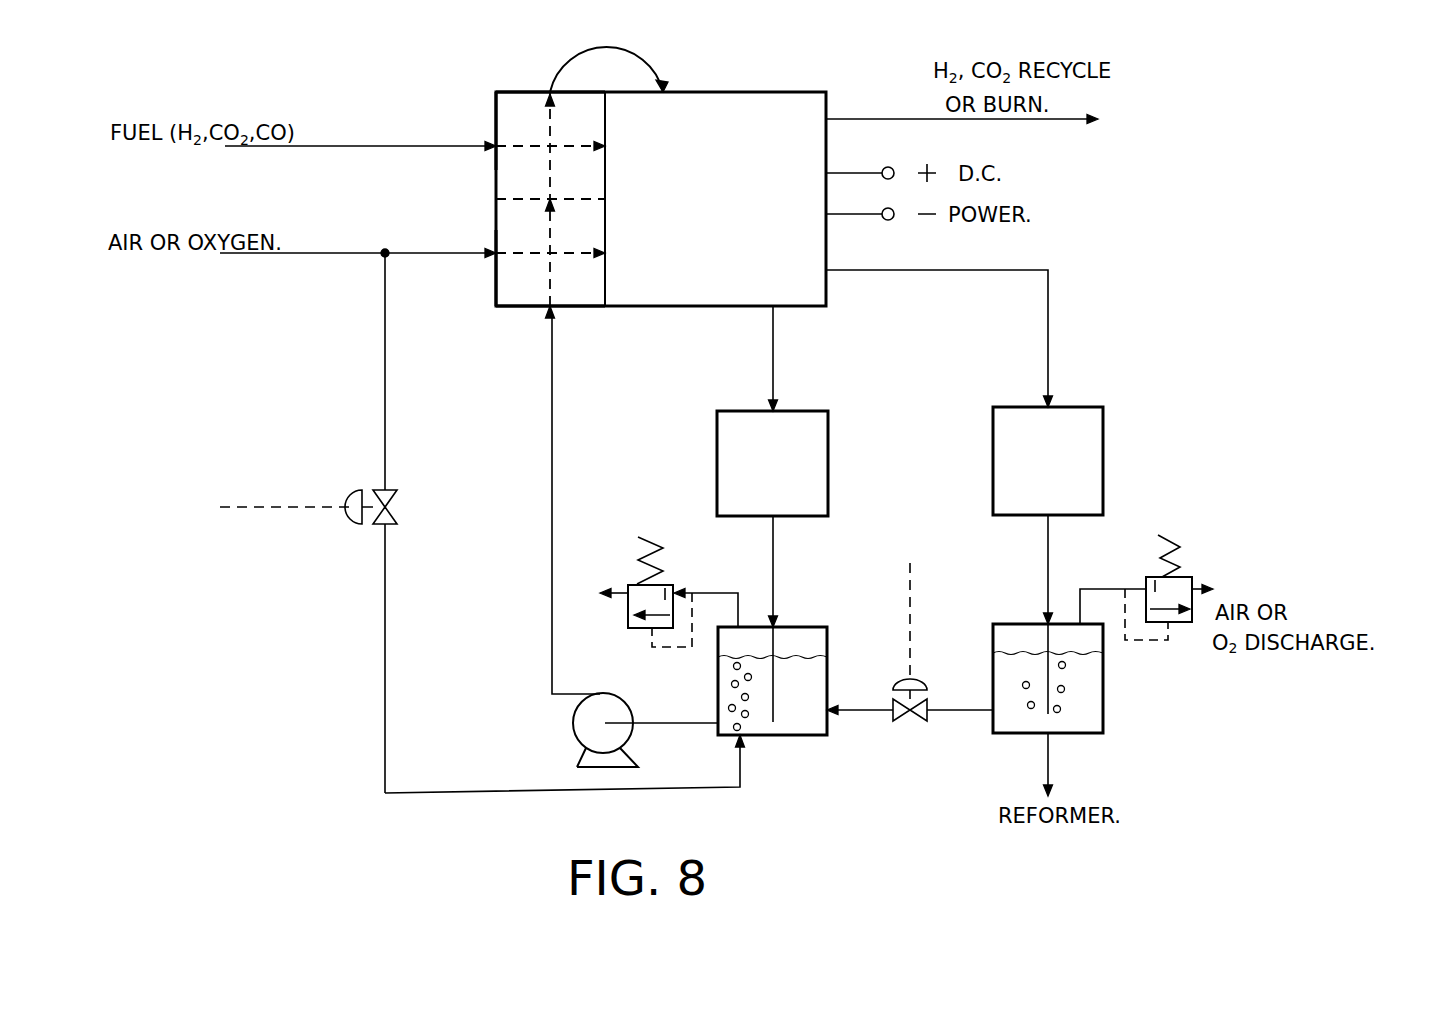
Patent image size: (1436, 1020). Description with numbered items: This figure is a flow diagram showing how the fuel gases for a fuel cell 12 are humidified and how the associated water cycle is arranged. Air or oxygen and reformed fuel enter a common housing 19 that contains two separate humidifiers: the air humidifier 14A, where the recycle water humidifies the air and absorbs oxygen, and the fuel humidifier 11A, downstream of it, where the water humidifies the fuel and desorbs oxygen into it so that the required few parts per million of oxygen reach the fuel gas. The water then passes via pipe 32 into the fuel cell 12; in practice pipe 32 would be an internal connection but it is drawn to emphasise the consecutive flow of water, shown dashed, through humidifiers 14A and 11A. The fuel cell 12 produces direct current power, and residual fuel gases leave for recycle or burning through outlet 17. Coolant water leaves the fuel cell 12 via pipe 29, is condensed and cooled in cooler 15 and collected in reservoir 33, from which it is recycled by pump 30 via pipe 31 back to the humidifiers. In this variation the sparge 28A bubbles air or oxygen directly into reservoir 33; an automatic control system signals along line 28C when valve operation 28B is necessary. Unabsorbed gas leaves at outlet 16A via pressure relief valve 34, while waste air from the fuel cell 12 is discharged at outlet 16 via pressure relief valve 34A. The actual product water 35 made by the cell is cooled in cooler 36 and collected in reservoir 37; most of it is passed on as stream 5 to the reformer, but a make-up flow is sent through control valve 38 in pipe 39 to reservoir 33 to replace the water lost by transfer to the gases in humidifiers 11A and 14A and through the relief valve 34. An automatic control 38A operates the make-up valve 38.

The reformer water feed 5 is at (1057, 764).
The fuel humidifier 11A is at (510, 110).
The fuel cell 12 is at (718, 202).
The air humidifier 14A is at (510, 290).
The cooler 15 is at (788, 475).
The air discharge 16 is at (1213, 591).
The unabsorbed gas outlet 16A is at (602, 593).
The fuel purge or burn 17 is at (979, 119).
The humidifier housing 19 is at (496, 192).
The sparge 28A is at (532, 764).
The sparge operation valve 28B is at (395, 497).
The control signal 28C is at (253, 507).
The coolant pipe 29 is at (789, 358).
The recycle pump 30 is at (625, 730).
The recycle water pipe 31 is at (573, 393).
The pipe 32 is at (611, 53).
The reservoir 33 is at (717, 683).
The pressure relief valve 34 is at (642, 590).
The pressure relief valve 34A is at (1178, 598).
The product water 35 is at (953, 338).
The cooler 36 is at (1063, 471).
The product water reservoir 37 is at (1103, 685).
The control valve 38 is at (900, 722).
The automatic control 38A is at (935, 617).
The make-up pipe 39 is at (973, 712).